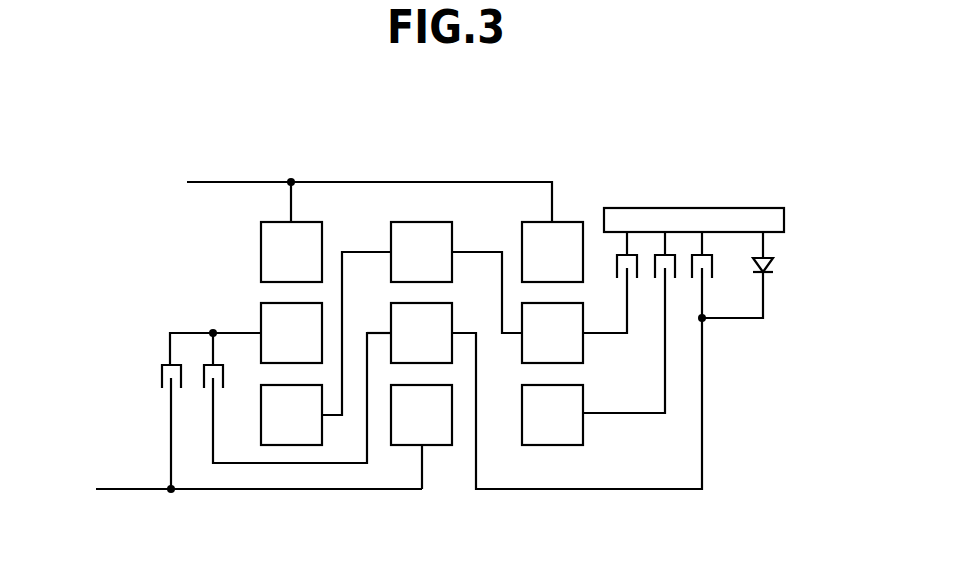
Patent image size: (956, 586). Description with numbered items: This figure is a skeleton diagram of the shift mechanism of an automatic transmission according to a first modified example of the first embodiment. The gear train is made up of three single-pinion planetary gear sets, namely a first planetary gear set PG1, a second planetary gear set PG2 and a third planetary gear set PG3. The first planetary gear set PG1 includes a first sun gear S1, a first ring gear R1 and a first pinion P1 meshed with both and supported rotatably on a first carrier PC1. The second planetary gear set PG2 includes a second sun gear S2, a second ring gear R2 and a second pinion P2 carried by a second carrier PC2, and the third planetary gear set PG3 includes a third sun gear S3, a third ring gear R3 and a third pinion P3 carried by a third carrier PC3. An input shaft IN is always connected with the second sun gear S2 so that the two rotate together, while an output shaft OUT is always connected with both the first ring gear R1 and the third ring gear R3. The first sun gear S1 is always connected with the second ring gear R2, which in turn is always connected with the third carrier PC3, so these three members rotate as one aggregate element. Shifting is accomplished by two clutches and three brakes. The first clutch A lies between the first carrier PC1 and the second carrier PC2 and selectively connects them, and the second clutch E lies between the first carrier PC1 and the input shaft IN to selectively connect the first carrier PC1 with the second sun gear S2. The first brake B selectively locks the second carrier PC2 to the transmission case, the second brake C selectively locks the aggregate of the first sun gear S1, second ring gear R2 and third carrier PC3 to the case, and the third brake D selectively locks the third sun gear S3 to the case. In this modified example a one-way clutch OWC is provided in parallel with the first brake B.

The output shaft OUT is at (336, 182).
The input shaft IN is at (128, 491).
The first planetary gear set PG1 is at (315, 392).
The second planetary gear set PG2 is at (456, 392).
The third planetary gear set PG3 is at (542, 392).
The first ring gear R1 is at (291, 252).
The first pinion P1 is at (291, 333).
The first sun gear S1 is at (291, 415).
The second ring gear R2 is at (421, 252).
The second pinion P2 is at (421, 333).
The second sun gear S2 is at (421, 415).
The third ring gear R3 is at (552, 252).
The third pinion P3 is at (552, 333).
The third sun gear S3 is at (552, 415).
The first carrier PC1 is at (230, 332).
The second carrier PC2 is at (382, 332).
The third carrier PC3 is at (600, 335).
The first clutch A is at (204, 364).
The second clutch E is at (162, 377).
The first brake B is at (697, 253).
The second brake C is at (622, 253).
The third brake D is at (659, 253).
The one-way clutch OWC is at (773, 265).